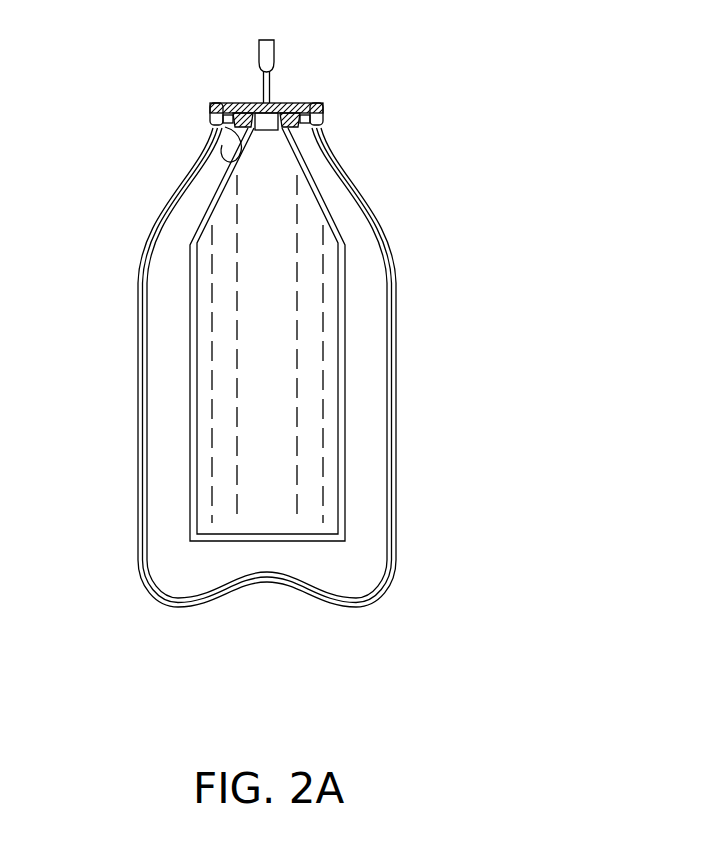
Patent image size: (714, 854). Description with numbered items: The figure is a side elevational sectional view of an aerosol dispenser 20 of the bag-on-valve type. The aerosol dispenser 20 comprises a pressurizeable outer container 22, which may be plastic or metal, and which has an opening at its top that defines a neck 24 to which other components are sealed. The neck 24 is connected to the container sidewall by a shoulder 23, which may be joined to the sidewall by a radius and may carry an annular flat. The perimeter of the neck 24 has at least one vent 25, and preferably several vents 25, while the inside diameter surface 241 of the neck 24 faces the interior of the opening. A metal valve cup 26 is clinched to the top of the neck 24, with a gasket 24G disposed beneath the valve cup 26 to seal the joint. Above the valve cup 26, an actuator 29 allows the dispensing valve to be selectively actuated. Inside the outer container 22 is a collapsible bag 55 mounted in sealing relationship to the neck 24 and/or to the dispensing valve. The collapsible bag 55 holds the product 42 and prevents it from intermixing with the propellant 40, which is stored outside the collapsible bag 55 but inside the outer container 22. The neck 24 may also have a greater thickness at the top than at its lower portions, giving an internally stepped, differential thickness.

The aerosol dispenser 20 is at (311, 372).
The outer container 22 is at (312, 370).
The shoulder 23 is at (363, 200).
The neck 24 is at (252, 135).
The gasket 24G is at (303, 100).
The vent 25 is at (213, 107).
The valve cup 26 is at (213, 117).
The actuator 29 is at (267, 53).
The inside diameter surface 241 is at (222, 158).
The propellant 40 is at (168, 510).
The product 42 is at (287, 334).
The collapsible bag 55 is at (317, 290).